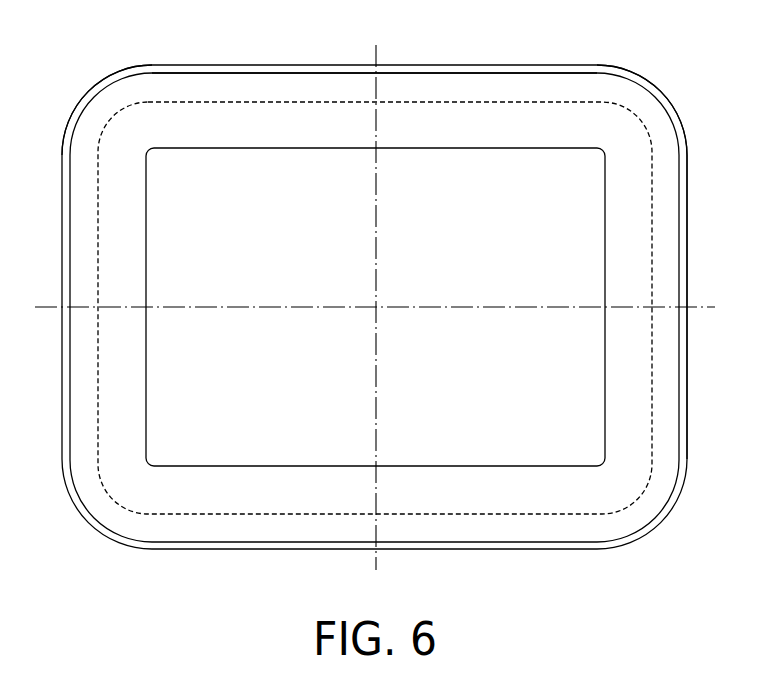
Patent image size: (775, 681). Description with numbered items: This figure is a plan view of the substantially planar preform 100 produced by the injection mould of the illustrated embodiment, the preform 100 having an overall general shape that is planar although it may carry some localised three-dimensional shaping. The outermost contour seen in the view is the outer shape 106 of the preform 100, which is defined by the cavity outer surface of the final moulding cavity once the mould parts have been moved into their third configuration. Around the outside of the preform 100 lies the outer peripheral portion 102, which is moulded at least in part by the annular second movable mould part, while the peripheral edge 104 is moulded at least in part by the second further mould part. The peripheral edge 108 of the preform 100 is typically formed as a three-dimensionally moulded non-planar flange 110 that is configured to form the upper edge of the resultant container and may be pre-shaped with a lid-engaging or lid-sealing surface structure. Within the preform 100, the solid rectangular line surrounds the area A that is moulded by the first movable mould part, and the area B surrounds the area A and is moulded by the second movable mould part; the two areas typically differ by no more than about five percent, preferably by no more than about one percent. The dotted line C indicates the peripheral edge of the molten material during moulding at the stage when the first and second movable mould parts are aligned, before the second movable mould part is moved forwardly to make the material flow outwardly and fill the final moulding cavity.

The preform 100 is at (608, 549).
The outer peripheral portion 102 is at (687, 370).
The peripheral edge 104 is at (66, 130).
The outer shape 106 is at (98, 396).
The peripheral edge 108 is at (637, 74).
The non-planar flange 110 is at (180, 73).
The area moulded by the first mould part A is at (458, 230).
The area moulded by the second mould part B is at (292, 118).
The dotted line indicating peripheral edge of material during moulding C is at (234, 517).